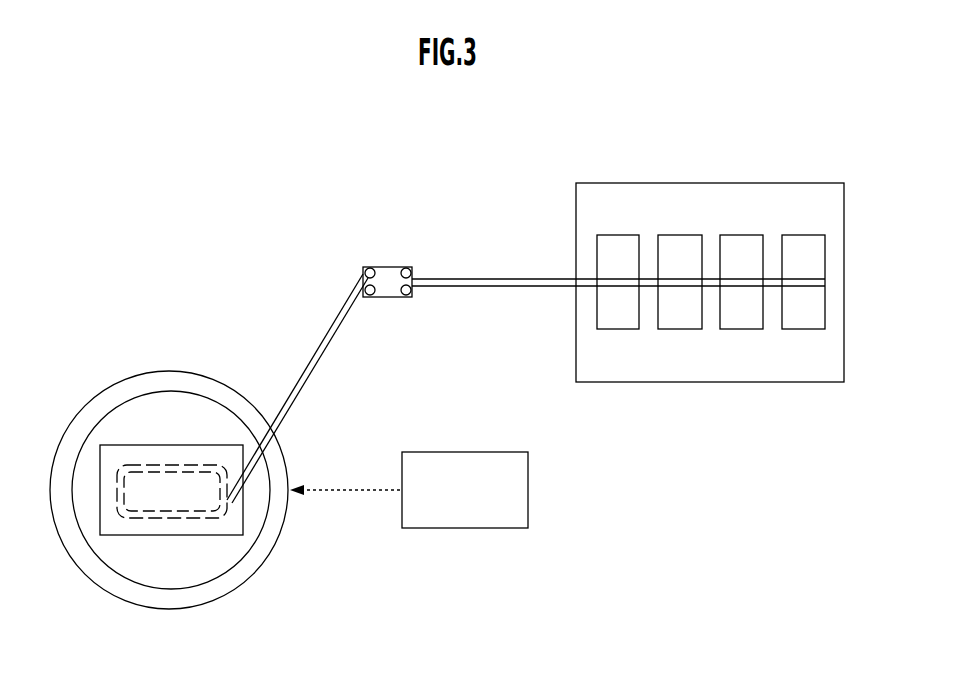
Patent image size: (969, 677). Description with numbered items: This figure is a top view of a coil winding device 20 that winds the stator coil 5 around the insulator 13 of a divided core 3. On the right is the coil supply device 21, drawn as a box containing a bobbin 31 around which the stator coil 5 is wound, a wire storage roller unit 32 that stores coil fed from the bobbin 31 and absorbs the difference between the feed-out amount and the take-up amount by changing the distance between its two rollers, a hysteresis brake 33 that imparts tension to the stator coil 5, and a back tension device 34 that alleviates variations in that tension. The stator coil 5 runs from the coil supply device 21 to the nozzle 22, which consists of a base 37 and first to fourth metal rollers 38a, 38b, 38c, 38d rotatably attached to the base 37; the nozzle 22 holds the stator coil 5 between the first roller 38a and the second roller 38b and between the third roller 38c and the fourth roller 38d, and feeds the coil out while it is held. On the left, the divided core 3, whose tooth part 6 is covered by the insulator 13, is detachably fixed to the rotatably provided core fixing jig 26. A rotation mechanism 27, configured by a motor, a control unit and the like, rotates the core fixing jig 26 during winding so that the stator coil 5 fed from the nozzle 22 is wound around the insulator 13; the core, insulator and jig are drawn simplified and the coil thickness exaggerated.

The coil winding device 20 is at (238, 223).
The coil supply device 21 is at (710, 261).
The nozzle 22 is at (392, 284).
The stator coil 5 is at (532, 279).
The core fixing jig 26 is at (100, 405).
The divided core 3 is at (206, 430).
The insulator 13 is at (183, 472).
The tooth part 6 is at (145, 485).
The rotation mechanism 27 is at (468, 452).
The bobbin 31 is at (803, 330).
The wire storage roller unit 32 is at (740, 330).
The hysteresis brake 33 is at (680, 330).
The back tension device 34 is at (618, 330).
The base 37 is at (388, 298).
The first roller 38a is at (409, 268).
The second roller 38b is at (408, 294).
The third roller 38c is at (367, 269).
The fourth roller 38d is at (370, 296).